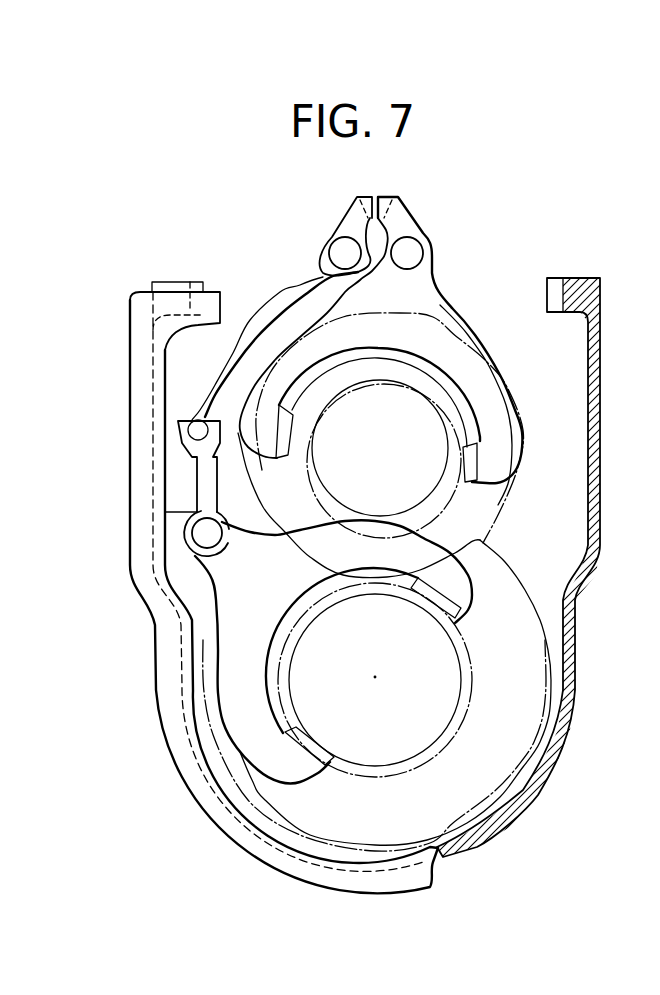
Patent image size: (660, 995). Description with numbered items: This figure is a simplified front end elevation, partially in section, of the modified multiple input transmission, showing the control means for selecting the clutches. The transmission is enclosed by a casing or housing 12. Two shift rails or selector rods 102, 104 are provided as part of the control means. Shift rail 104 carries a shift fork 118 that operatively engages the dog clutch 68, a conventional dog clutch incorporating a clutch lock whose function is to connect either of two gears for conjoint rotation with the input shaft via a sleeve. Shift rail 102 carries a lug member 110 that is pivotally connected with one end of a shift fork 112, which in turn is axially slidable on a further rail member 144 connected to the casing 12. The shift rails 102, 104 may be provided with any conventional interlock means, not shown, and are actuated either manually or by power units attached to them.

The casing or housing 12 is at (577, 284).
The dog clutch 68 is at (288, 482).
The shift rail 102 is at (343, 252).
The shift rail 104 is at (408, 252).
The lug member 110 is at (278, 300).
The shift fork 112 is at (230, 607).
The shift fork 118 is at (434, 307).
The rail member 144 is at (203, 534).